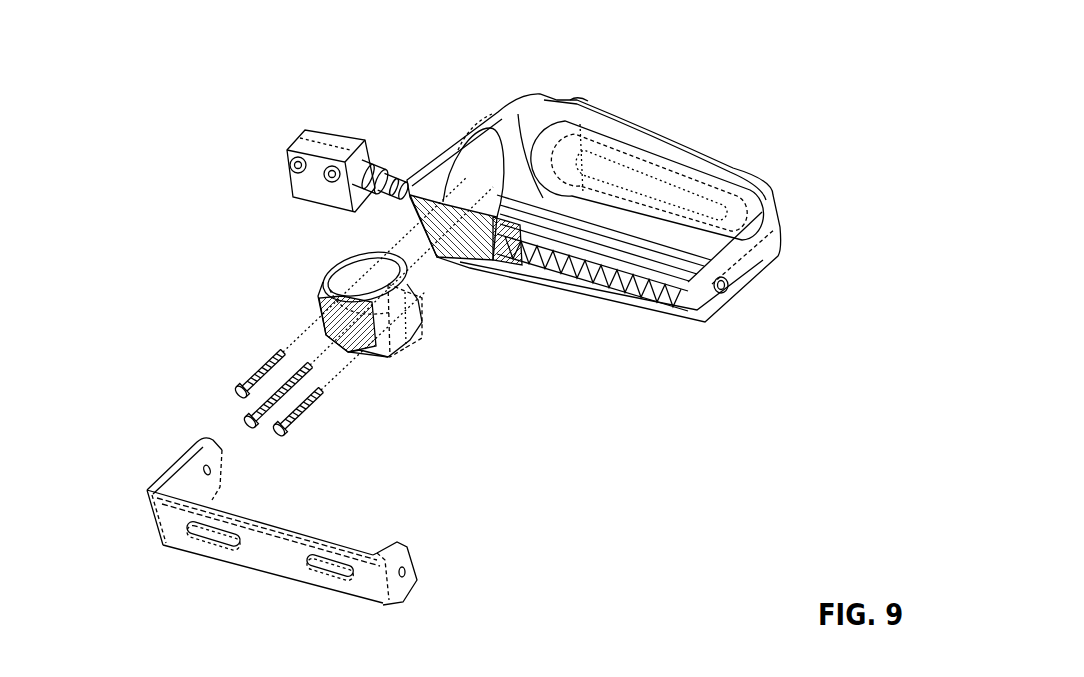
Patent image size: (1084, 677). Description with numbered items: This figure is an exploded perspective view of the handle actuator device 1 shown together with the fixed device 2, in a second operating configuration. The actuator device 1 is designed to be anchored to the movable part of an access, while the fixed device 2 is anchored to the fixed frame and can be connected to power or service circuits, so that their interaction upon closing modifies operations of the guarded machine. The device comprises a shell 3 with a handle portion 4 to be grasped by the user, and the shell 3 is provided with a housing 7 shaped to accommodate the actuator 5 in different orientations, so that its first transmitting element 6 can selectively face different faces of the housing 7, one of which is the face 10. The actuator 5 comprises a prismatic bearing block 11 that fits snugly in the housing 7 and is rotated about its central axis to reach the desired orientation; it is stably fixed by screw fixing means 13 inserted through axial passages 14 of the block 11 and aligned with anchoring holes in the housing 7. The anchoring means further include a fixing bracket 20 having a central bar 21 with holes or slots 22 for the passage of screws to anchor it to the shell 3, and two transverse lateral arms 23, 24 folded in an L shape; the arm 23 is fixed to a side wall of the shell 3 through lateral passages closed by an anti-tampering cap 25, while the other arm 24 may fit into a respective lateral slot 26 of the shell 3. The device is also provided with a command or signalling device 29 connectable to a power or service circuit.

The actuator device 1 is at (887, 137).
The fixed device 2 is at (258, 144).
The shell 3 is at (748, 270).
The handle portion 4 is at (707, 165).
The actuator 5 is at (262, 307).
The first transmitting element 6 is at (330, 272).
The housing 7 is at (460, 240).
The face of the housing 10 is at (456, 155).
The bearing block 11 is at (398, 333).
The screw fixing means 13 is at (236, 379).
The axial passages 14 is at (366, 348).
The fixing bracket 20 is at (157, 562).
The central bar 21 is at (272, 562).
The slots 22 is at (200, 537).
The transverse lateral arm 23 is at (158, 480).
The transverse lateral arm 24 is at (410, 592).
The anti-tampering cap 25 is at (722, 294).
The lateral slot 26 is at (681, 305).
The command or signalling device 29 is at (580, 97).